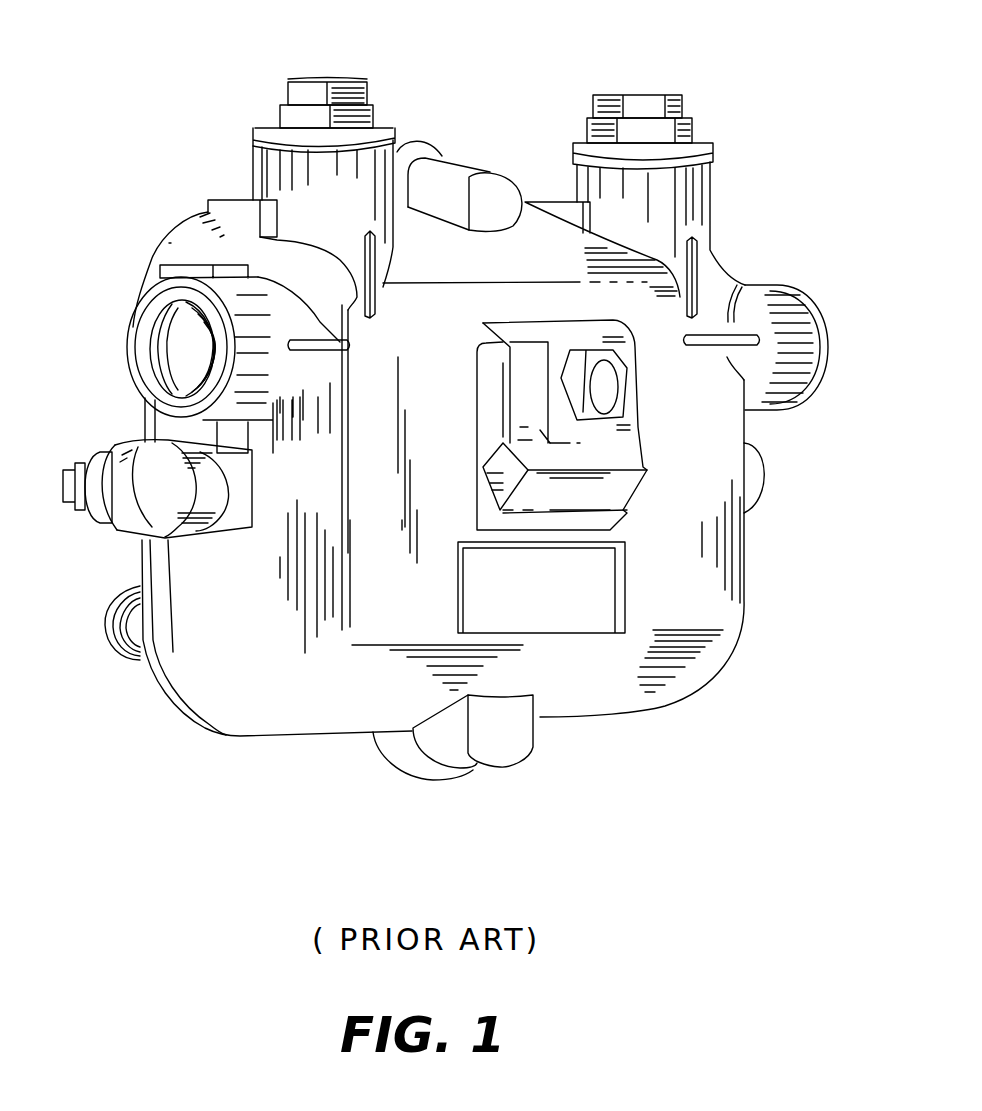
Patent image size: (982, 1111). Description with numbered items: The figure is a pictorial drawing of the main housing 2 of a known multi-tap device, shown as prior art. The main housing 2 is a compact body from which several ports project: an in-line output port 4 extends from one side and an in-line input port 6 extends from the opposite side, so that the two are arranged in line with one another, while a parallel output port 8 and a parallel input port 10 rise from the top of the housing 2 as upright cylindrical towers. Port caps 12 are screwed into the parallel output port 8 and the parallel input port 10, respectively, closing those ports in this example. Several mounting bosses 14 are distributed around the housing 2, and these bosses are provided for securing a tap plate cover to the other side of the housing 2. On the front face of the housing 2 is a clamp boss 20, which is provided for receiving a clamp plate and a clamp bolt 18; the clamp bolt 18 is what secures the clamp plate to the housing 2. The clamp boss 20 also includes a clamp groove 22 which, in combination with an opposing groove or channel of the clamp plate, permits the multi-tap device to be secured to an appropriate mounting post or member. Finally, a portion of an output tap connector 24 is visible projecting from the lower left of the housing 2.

The main housing 2 is at (750, 580).
The in-line output port 4 is at (753, 290).
The in-line input port 6 is at (130, 342).
The parallel output port 8 is at (695, 203).
The parallel input port 10 is at (253, 170).
The port caps 12 is at (370, 91).
The mounting bosses 14 is at (443, 175).
The clamp bolt 18 is at (607, 387).
The clamp boss 20 is at (498, 390).
The clamp groove 22 is at (503, 483).
The output tap connector 24 is at (112, 632).